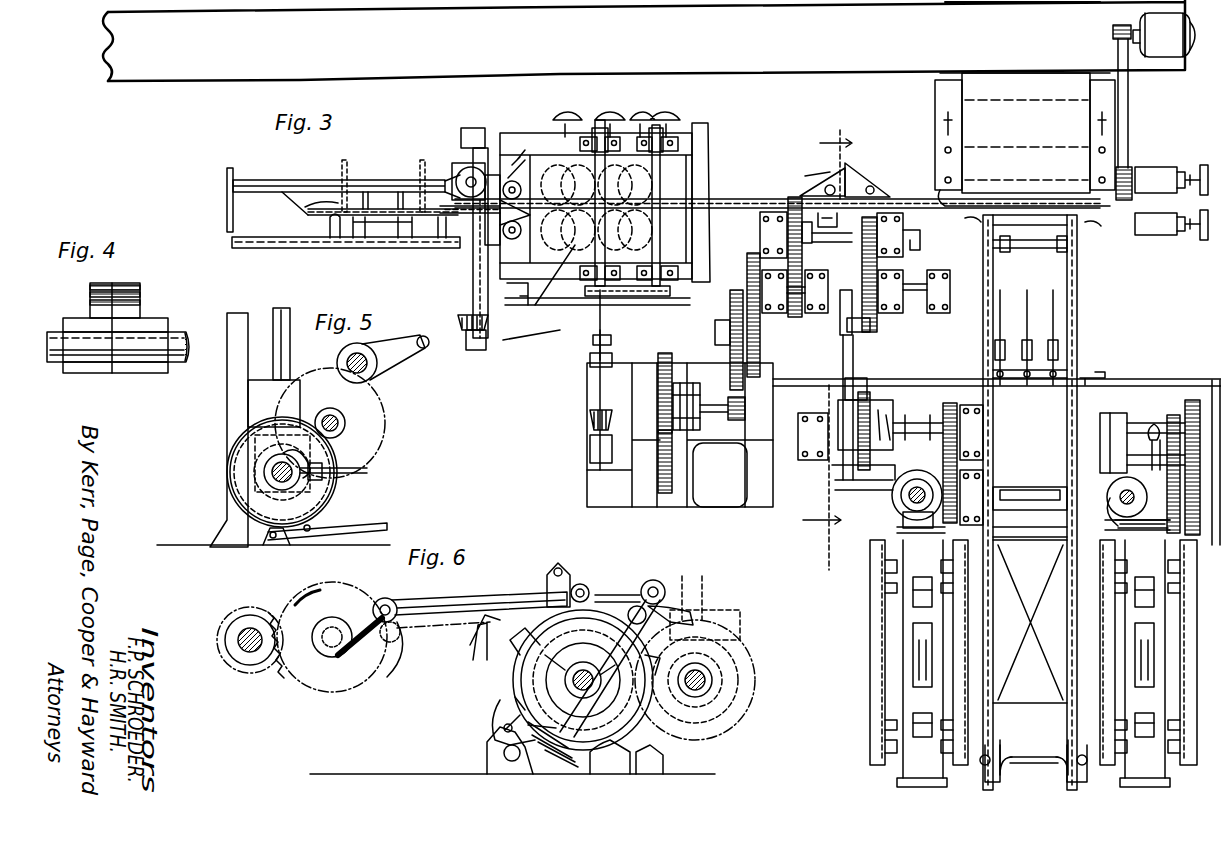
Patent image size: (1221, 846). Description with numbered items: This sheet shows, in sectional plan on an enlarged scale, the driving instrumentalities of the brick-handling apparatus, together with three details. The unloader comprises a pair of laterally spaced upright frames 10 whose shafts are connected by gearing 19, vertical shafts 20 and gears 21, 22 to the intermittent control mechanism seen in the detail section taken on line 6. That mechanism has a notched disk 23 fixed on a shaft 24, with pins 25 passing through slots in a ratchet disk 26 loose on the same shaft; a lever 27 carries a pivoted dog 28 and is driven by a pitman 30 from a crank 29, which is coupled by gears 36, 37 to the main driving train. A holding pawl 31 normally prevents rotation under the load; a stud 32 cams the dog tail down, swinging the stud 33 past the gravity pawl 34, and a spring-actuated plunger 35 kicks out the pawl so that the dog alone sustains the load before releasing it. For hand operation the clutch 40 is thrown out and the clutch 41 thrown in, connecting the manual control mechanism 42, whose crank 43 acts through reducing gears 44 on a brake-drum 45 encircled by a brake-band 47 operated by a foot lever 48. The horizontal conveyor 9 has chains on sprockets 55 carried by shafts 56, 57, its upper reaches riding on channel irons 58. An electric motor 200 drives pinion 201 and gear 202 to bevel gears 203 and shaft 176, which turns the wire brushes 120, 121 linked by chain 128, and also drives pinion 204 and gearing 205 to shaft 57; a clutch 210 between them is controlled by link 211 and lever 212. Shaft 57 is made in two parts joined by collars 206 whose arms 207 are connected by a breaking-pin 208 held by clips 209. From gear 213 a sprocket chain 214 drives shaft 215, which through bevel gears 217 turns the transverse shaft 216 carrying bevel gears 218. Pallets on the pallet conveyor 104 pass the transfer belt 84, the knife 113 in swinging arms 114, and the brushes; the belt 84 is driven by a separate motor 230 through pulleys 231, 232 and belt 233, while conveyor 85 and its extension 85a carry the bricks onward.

In FIG. 3, the conveyor 85 is at (644, 40).
In FIG. 3, the conveyor band extension 85a is at (1010, 3).
In FIG. 3, the motor 230 is at (1165, 55).
In FIG. 3, the pulley 231 is at (1112, 32).
In FIG. 3, the pulley 232 is at (1133, 142).
In FIG. 3, the belt 233 is at (1129, 115).
In FIG. 3, the transfer belt 84 is at (1025, 139).
In FIG. 3, the pallet conveyor 104 is at (900, 199).
In FIG. 3, the knife 113 is at (820, 197).
In FIG. 3, the swinging arms 114 is at (830, 179).
In FIG. 3, the section line 6— 6 is at (827, 339).
In FIG. 3, the transverse shaft 216 is at (470, 257).
In FIG. 3, the bevel gears 218 is at (458, 160).
In FIG. 3, the bevel gears 217 is at (462, 312).
In FIG. 3, the revolving wire brushes 120 is at (597, 204).
In FIG. 3, the revolving wire brushes 121 is at (654, 238).
In FIG. 3, the shaft 176 is at (595, 312).
In FIG. 3, the chain 128 is at (624, 325).
In FIG. 3, the shaft 215 is at (539, 300).
In FIG. 3, the sprocket chain 214 is at (712, 325).
In FIG. 3, the gear 213 is at (735, 290).
In FIG. 3, the gearing 205 is at (794, 278).
In FIG. 3, the gear 37 is at (844, 260).
In FIG. 6, the gear 37 is at (273, 617).
In FIG. 3, the gear 36 is at (878, 327).
In FIG. 6, the gear 36 is at (290, 668).
In FIG. 3, the electric motor 200 is at (718, 504).
In FIG. 3, the pinion 201 is at (668, 498).
In FIG. 3, the gear 202 is at (665, 356).
In FIG. 3, the bevel gears 203 is at (592, 418).
In FIG. 3, the clutch 210 is at (718, 433).
In FIG. 3, the pinion 204 is at (748, 405).
In FIG. 3, the link 211 is at (800, 379).
In FIG. 3, the shaft 24 is at (796, 442).
In FIG. 6, the shaft 24 is at (595, 690).
In FIG. 3, the clutch 40 is at (932, 425).
In FIG. 3, the gear 22 is at (958, 434).
In FIG. 3, the vertical shafts 20 is at (910, 497).
In FIG. 4, the vertical shafts 20 is at (73, 376).
In FIG. 5, the vertical shafts 20 is at (290, 340).
In FIG. 3, the gearing 19 is at (905, 515).
In FIG. 5, the gearing 19 is at (337, 500).
In FIG. 3, the gear 21 is at (1033, 531).
In FIG. 6, the gear 21 is at (735, 723).
In FIG. 3, the longitudinal channel irons 58 is at (997, 648).
In FIG. 3, the horizontal conveyor 9 is at (1065, 680).
In FIG. 3, the lever 212 is at (1092, 378).
In FIG. 3, the shaft 57 is at (1012, 250).
In FIG. 4, the shaft 57 is at (106, 368).
In FIG. 3, the sprockets 55 is at (980, 220).
In FIG. 3, the shaft 56 is at (1033, 757).
In FIG. 3, the upright frames 10 is at (896, 784).
In FIG. 5, the upright frames 10 is at (230, 410).
In FIG. 3, the clutch 41 is at (1160, 462).
In FIG. 3, the reducing gears 44 is at (1182, 415).
In FIG. 5, the reducing gears 44 is at (385, 425).
In FIG. 3, the crank 43 is at (1210, 380).
In FIG. 5, the crank 43 is at (400, 355).
In FIG. 3, the manual control mechanism 42 is at (1172, 529).
In FIG. 5, the manual control mechanism 42 is at (345, 483).
In FIG. 4, the collars 206 is at (150, 375).
In FIG. 4, the breaking-pin 208 is at (145, 310).
In FIG. 4, the removable clips 209 is at (90, 297).
In FIG. 4, the arms 207 is at (95, 286).
In FIG. 5, the brake-drum 45 is at (228, 487).
In FIG. 5, the brake-band 47 is at (330, 533).
In FIG. 5, the foot lever 48 is at (330, 538).
In FIG. 6, the crank 29 is at (384, 677).
In FIG. 6, the pitman 30 is at (430, 600).
In FIG. 6, the gravity pawl 34 is at (480, 630).
In FIG. 6, the stud 32 is at (560, 570).
In FIG. 6, the stud 33 is at (588, 590).
In FIG. 6, the lever 27 is at (657, 582).
In FIG. 6, the dog 28 is at (690, 605).
In FIG. 6, the pins 25 is at (575, 667).
In FIG. 6, the holding pawl 31 is at (508, 710).
In FIG. 6, the spring-actuated plunger 35 is at (543, 778).
In FIG. 6, the ratchet disk 26 is at (615, 766).
In FIG. 6, the notched disk 23 is at (623, 743).